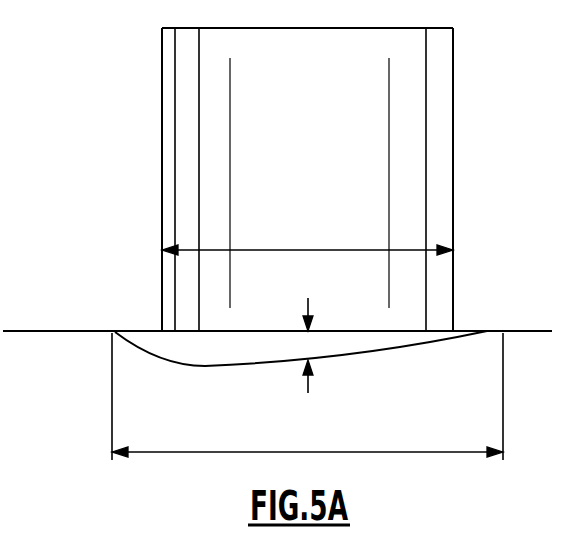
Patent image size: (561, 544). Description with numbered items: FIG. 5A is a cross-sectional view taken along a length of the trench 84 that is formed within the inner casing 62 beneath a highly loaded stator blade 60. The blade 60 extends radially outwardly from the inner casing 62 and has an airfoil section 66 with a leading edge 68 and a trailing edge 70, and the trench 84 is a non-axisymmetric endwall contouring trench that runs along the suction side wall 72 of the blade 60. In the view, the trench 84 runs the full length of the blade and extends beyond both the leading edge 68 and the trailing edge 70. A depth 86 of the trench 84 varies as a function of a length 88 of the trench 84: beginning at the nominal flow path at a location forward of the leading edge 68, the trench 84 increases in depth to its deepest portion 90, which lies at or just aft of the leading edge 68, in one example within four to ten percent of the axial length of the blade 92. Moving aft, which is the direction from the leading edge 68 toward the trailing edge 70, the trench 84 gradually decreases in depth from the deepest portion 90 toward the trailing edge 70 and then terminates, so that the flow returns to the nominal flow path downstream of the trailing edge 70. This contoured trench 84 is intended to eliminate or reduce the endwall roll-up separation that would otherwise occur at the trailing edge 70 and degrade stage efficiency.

The stator blade 60 is at (86, 123).
The inner casing 62 is at (72, 331).
The airfoil section 66 is at (311, 150).
The leading edge 68 is at (162, 61).
The trailing edge 70 is at (453, 85).
The suction side wall 72 is at (418, 59).
The trench 84 is at (348, 340).
The depth 86 is at (308, 298).
The length 88 is at (390, 452).
The deepest portion 90 is at (301, 372).
The axial length of the blade 92 is at (315, 250).